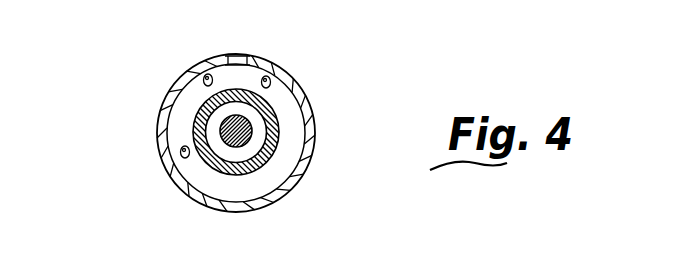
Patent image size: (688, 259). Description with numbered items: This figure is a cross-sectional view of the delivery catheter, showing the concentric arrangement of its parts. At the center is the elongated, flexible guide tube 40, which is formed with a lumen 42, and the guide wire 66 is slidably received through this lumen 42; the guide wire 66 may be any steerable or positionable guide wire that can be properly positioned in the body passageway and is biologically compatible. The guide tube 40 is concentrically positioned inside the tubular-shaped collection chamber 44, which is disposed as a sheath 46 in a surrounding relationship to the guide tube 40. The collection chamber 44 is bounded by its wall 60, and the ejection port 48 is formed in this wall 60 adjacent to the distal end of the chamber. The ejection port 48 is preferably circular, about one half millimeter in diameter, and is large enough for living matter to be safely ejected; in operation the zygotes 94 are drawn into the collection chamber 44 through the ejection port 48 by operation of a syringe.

The guide tube 40 is at (194, 134).
The lumen 42 is at (216, 150).
The collection chamber 44 is at (292, 110).
The sheath 46 is at (283, 73).
The ejection port 48 is at (237, 53).
The wall 60 is at (181, 96).
The guide wire 66 is at (252, 133).
The zygotes 94 is at (207, 73).